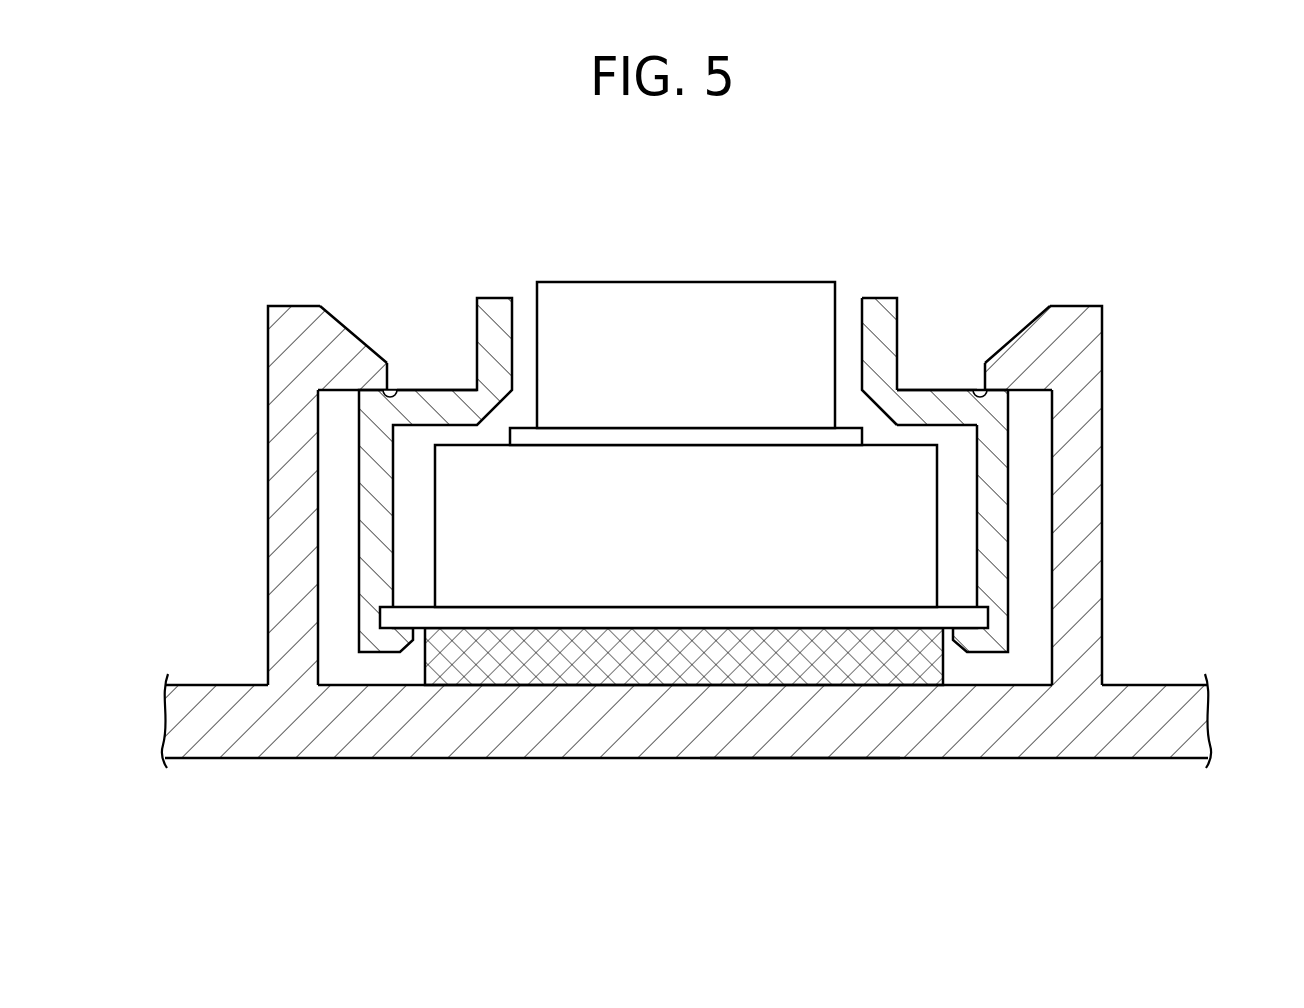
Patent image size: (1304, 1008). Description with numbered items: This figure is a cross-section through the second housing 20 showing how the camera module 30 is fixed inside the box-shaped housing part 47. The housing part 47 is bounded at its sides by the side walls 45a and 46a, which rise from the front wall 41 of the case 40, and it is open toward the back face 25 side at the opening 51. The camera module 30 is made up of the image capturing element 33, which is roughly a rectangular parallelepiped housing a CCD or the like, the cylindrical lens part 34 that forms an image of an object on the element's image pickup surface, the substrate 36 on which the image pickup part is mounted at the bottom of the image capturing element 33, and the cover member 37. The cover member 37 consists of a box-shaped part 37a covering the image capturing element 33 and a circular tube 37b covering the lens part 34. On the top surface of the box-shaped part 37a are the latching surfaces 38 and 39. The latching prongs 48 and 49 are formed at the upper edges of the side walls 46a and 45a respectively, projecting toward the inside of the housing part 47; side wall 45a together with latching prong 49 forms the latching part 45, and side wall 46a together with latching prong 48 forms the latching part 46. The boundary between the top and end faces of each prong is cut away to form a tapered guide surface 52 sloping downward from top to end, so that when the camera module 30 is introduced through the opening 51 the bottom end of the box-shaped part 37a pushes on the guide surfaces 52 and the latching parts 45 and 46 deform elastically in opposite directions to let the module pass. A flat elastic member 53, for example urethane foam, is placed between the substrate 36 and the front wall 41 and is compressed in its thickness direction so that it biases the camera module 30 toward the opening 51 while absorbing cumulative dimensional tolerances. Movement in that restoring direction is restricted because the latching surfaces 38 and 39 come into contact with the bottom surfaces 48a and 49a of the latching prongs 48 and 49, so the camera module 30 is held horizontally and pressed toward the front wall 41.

The second housing 20 is at (686, 592).
The back face 25 is at (848, 762).
The camera module 30 is at (681, 504).
The image capturing element 33 is at (697, 554).
The lens part 34 is at (698, 379).
The substrate 36 is at (848, 617).
The cover member 37 is at (1032, 391).
The box-shaped part 37a is at (995, 510).
The circular tube 37b is at (873, 308).
The latching surface 38 is at (367, 376).
The latching surface 39 is at (1003, 368).
The case 40 is at (1043, 780).
The front wall 41 is at (742, 752).
The latching part 45 is at (1091, 440).
The side wall 45a is at (1105, 420).
The latching part 46 is at (295, 429).
The side wall 46a is at (268, 468).
The housing part 47 is at (489, 288).
The latching prong 48 is at (435, 412).
The bottom surface 48a is at (397, 386).
The latching prong 49 is at (967, 296).
The bottom surface 49a is at (977, 386).
The opening 51 is at (459, 348).
The guide surface 52 is at (350, 312).
The elastic member 53 is at (592, 682).